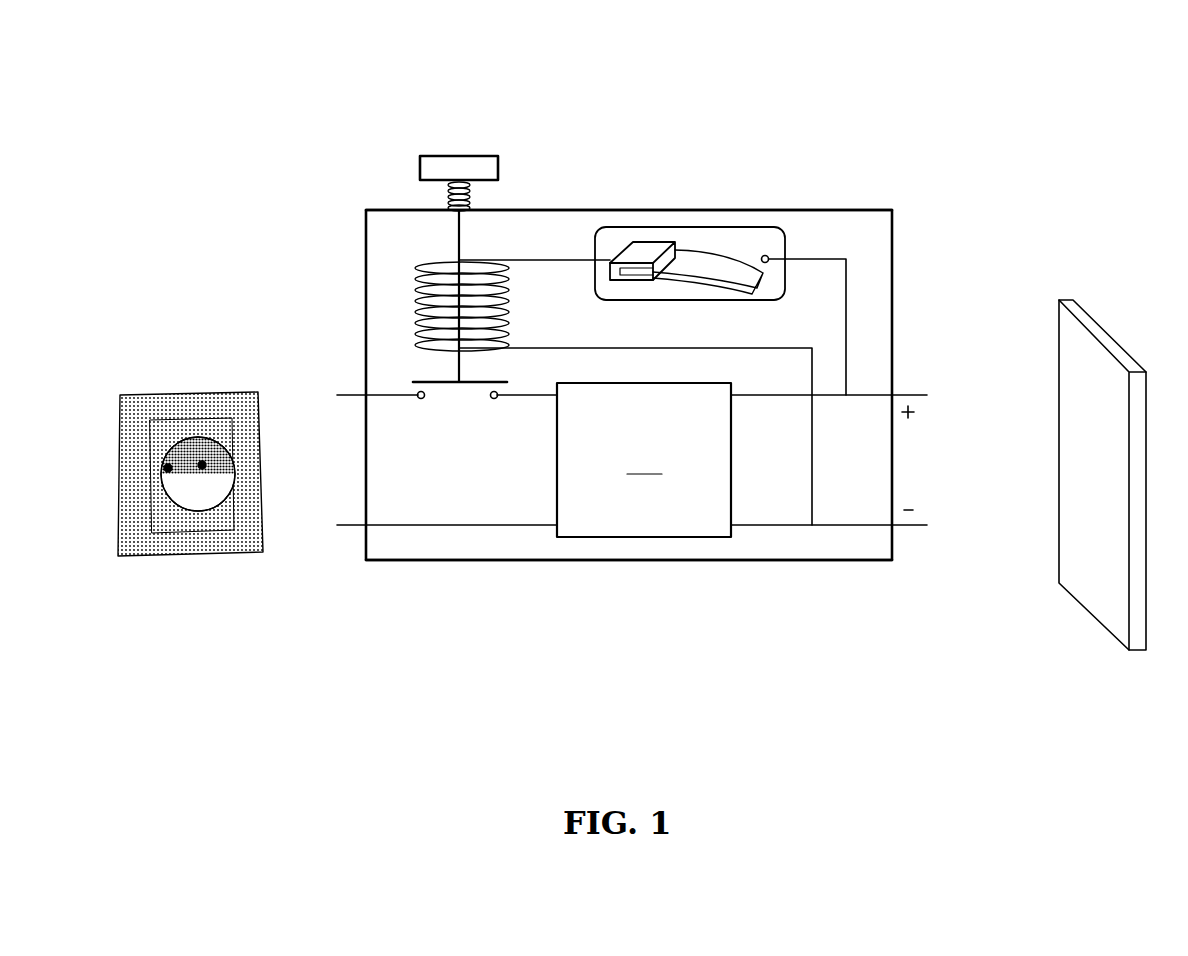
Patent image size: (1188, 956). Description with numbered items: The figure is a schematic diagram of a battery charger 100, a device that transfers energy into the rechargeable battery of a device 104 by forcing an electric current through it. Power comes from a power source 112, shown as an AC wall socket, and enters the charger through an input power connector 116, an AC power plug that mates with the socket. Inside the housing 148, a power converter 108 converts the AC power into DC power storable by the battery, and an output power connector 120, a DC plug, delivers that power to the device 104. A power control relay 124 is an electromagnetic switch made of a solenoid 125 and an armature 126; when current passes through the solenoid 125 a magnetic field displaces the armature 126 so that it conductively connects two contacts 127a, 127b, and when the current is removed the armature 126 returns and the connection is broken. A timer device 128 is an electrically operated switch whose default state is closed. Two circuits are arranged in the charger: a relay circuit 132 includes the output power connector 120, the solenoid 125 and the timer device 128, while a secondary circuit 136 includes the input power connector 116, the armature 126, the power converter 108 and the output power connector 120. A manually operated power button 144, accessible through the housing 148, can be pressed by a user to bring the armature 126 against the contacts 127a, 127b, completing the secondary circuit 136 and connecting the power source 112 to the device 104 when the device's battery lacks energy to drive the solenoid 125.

The battery charger 100 is at (846, 115).
The device 104 is at (1147, 345).
The power converter 108 is at (635, 442).
The power source 112 is at (98, 405).
The input power connector 116 is at (298, 405).
The output power connector 120 is at (943, 407).
The power control relay 124 is at (387, 345).
The solenoid 125 is at (430, 292).
The armature 126 is at (445, 380).
The contact 127a is at (422, 399).
The contact 127b is at (495, 399).
The timer device 128 is at (708, 227).
The relay circuit 132 is at (852, 323).
The secondary circuit 136 is at (400, 538).
The manually operated power button 144 is at (442, 173).
The housing 148 is at (583, 210).